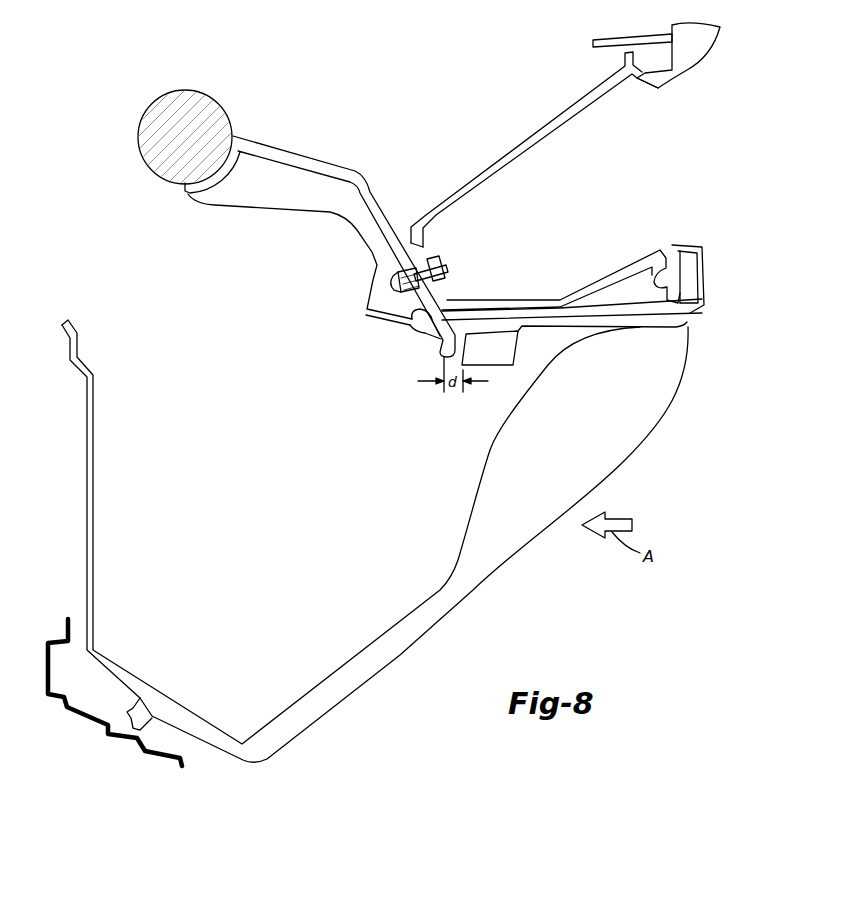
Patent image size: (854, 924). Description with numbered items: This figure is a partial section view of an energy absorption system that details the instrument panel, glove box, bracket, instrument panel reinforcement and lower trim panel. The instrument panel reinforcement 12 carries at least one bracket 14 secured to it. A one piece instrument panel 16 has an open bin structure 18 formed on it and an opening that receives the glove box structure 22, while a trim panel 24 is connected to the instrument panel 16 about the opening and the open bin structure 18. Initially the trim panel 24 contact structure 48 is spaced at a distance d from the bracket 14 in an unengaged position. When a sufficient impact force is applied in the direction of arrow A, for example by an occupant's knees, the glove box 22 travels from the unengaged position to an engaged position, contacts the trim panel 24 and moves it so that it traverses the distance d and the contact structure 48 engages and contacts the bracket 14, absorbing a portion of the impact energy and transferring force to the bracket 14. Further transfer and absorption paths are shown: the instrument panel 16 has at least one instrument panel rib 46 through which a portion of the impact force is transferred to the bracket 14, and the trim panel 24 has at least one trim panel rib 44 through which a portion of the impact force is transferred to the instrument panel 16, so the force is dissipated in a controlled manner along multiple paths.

The instrument panel reinforcement 12 is at (219, 95).
The bracket 14 is at (376, 185).
The instrument panel 16 is at (651, 252).
The open bin structure 18 is at (470, 243).
The glove box structure 22 is at (652, 428).
The trim panel 24 is at (705, 268).
The trim panel rib 44 is at (694, 294).
The instrument panel rib 46 is at (627, 298).
The contact structure 48 is at (500, 360).